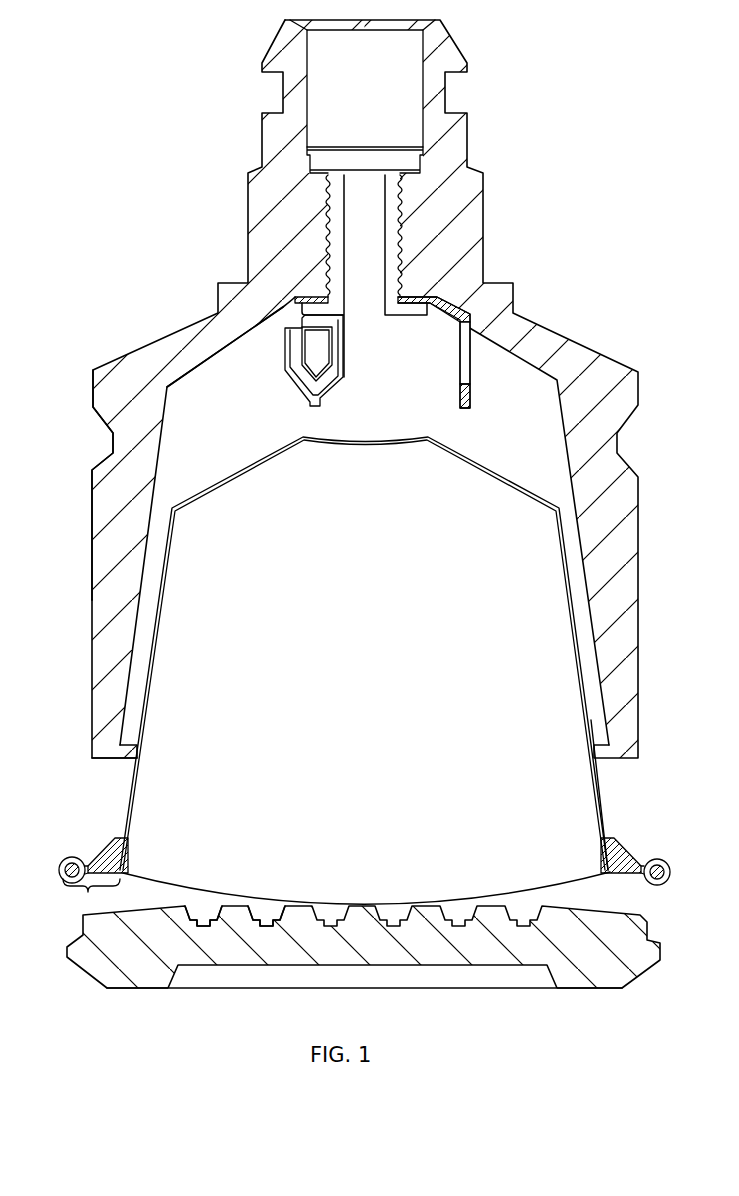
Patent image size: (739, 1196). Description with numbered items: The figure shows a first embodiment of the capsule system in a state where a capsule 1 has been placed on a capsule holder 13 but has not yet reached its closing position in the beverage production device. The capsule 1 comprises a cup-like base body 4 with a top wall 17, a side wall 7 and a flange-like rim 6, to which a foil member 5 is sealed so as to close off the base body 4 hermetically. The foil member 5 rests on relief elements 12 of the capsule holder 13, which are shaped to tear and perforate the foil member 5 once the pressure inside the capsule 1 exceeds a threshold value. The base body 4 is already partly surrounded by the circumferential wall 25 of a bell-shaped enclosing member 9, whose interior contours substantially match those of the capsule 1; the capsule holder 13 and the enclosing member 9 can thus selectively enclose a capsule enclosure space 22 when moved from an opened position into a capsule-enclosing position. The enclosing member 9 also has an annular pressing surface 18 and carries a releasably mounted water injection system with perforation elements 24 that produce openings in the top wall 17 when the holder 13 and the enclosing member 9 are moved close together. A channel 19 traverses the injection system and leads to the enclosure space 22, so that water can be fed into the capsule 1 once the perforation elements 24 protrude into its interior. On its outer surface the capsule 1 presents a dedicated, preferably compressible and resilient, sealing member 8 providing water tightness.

The capsule 1 is at (76, 775).
The cup-like base body 4 is at (614, 778).
The foil member 5 is at (457, 900).
The flange-like rim 6 is at (91, 898).
The side wall 7 is at (578, 611).
The sealing member 8 is at (90, 854).
The enclosing member 9 is at (74, 469).
The relief elements 12 is at (238, 902).
The capsule holder 13 is at (60, 914).
The top wall 17 is at (490, 470).
The annular pressing surface 18 is at (92, 757).
The channel 19 is at (382, 248).
The capsule enclosure space 22 is at (199, 418).
The perforation elements 24 is at (285, 347).
The circumferential wall 25 is at (122, 596).